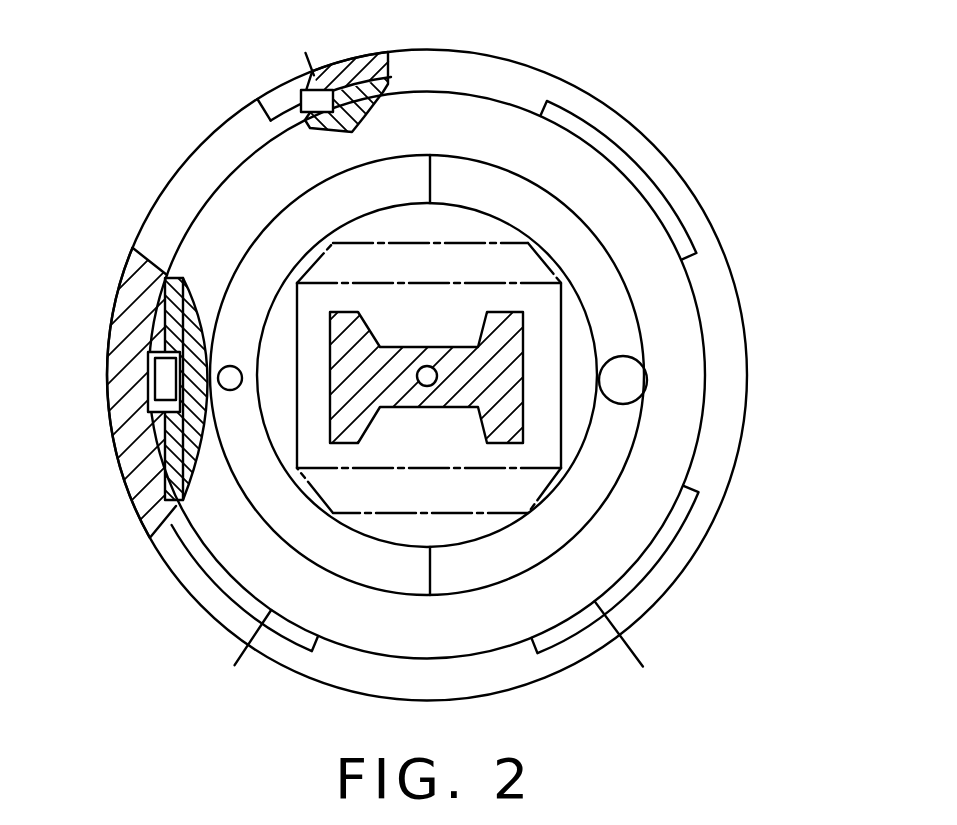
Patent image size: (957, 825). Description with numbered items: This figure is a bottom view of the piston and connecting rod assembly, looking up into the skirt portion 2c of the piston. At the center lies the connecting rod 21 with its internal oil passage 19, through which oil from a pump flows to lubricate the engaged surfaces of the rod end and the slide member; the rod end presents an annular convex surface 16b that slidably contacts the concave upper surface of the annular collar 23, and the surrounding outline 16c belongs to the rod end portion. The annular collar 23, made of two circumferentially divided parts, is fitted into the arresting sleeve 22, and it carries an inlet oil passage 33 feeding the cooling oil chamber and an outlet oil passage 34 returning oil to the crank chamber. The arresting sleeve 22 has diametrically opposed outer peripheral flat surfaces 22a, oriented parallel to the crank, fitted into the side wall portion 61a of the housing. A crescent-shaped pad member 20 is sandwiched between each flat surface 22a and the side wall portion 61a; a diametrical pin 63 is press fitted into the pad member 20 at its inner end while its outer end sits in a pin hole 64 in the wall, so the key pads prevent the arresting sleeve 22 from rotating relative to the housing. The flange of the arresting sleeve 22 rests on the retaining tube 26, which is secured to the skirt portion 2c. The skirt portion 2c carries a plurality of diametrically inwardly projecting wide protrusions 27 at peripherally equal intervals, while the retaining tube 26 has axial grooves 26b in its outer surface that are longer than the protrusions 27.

The skirt portion 2c is at (273, 100).
The wide protrusions 27 is at (517, 92).
The axial grooves 26b is at (443, 365).
The retaining tube 26 is at (362, 82).
The annular collar 23 is at (399, 200).
The pad member 20 is at (143, 320).
The side wall portion 61a is at (173, 283).
The arresting sleeve 22 is at (197, 290).
The outer peripheral flat surfaces 22a is at (143, 340).
The diametrical pin 63 is at (173, 383).
The pin hole 64 is at (158, 417).
The outlet oil passage 34 is at (232, 392).
The inlet oil passage 33 is at (622, 404).
The plate outline 16c is at (533, 310).
The annular convex surface 16b is at (430, 321).
The connecting rod 21 is at (463, 363).
The internal oil passage 19 is at (427, 387).